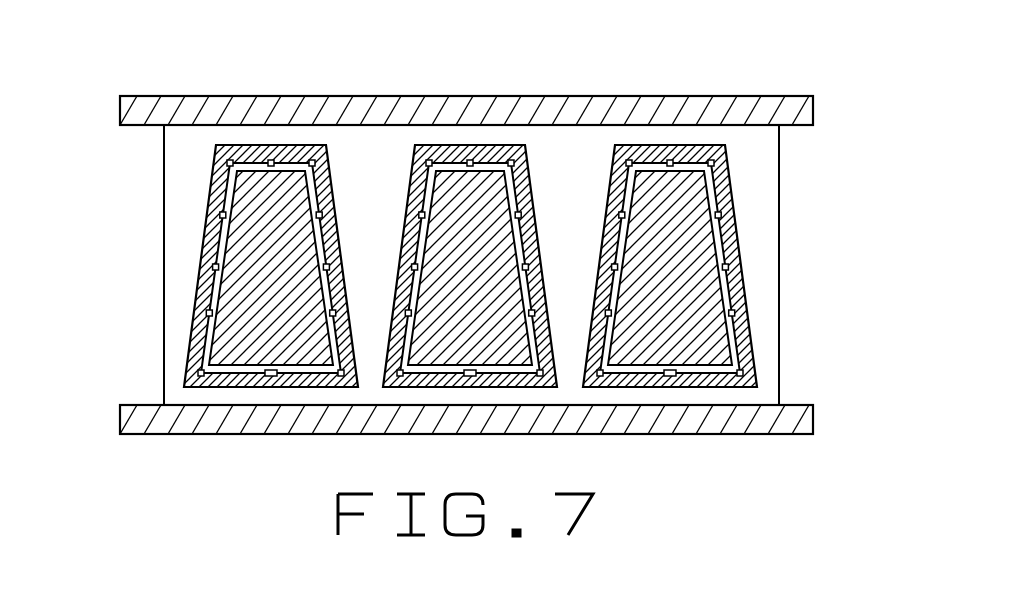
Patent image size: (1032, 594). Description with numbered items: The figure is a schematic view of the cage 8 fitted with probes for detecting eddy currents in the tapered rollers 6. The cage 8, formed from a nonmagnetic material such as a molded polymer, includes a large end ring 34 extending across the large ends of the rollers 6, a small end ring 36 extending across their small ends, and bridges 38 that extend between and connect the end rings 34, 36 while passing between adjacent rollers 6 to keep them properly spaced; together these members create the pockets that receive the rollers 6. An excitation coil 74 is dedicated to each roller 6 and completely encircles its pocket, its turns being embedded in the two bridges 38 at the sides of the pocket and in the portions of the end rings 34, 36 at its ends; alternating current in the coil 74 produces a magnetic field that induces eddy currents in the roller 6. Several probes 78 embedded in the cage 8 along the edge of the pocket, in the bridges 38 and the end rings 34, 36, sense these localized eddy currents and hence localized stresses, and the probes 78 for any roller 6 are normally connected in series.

The cage 8 is at (469, 255).
The small end ring 36 is at (705, 96).
The large end ring 34 is at (166, 434).
The tapered roller 6 is at (262, 270).
The excitation coil 74 is at (740, 233).
The probe 78 is at (345, 247).
The bridge 38 is at (388, 165).